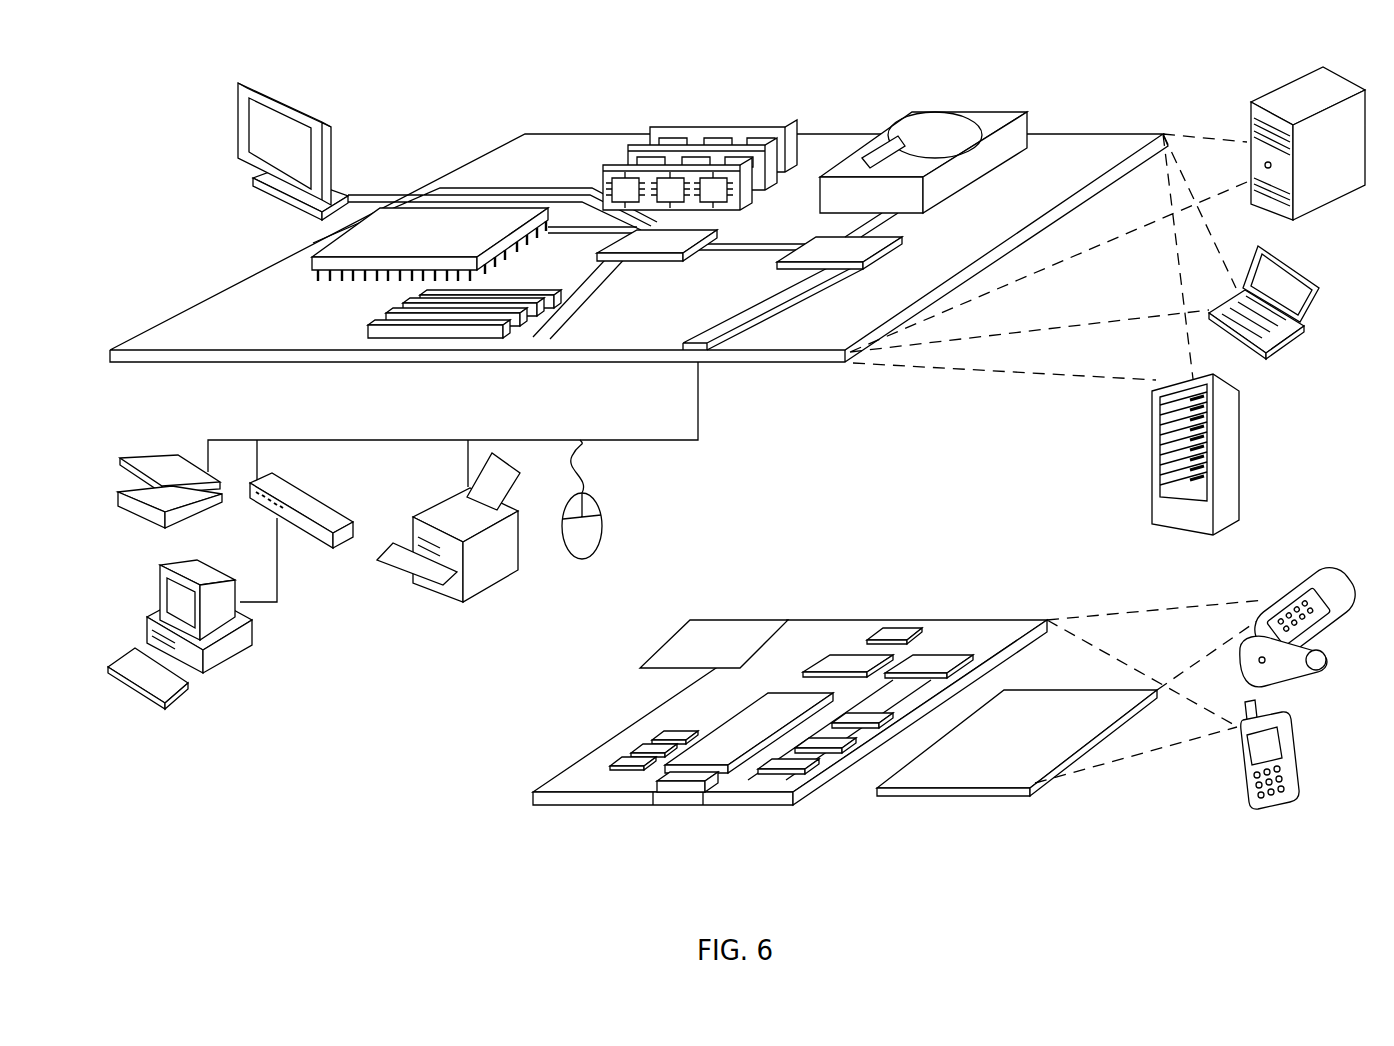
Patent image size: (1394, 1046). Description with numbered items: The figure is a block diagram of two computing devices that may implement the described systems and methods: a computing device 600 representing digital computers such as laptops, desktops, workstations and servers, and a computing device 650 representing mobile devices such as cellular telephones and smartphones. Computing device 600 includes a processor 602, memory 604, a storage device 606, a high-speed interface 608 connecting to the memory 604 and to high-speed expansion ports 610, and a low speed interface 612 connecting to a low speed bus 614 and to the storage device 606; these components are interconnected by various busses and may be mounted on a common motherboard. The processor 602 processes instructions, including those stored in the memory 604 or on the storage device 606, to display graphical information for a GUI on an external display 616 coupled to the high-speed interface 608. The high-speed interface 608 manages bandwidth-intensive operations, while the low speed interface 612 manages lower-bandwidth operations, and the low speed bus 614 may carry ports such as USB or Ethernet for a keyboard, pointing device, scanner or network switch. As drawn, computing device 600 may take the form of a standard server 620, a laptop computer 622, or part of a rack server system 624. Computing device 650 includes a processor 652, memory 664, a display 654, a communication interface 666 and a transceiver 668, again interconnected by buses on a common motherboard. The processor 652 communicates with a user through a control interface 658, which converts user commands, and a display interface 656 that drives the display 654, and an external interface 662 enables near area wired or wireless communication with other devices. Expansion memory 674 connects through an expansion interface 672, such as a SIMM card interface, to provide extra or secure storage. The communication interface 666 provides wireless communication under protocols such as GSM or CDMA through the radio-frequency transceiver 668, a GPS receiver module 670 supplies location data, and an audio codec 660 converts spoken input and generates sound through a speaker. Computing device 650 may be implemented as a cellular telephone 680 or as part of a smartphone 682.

The computing device 600 is at (452, 108).
The processor 602 is at (318, 262).
The memory 604 is at (662, 130).
The storage device 606 is at (906, 120).
The high-speed interface 608 is at (605, 243).
The high-speed expansion ports 610 is at (392, 323).
The low speed interface 612 is at (822, 252).
The low speed bus 614 is at (712, 352).
The display 616 is at (243, 80).
The standard server 620 is at (1250, 110).
The laptop computer 622 is at (1328, 268).
The rack server system 624 is at (1205, 502).
The computing device 650 is at (851, 722).
The processor 652 is at (720, 758).
The display 654 is at (972, 774).
The display interface 656 is at (790, 776).
The control interface 658 is at (833, 762).
The audio codec 660 is at (865, 724).
The external interface 662 is at (685, 794).
The memory 664 is at (632, 752).
The communication interface 666 is at (851, 658).
The transceiver 668 is at (931, 658).
The GPS receiver module 670 is at (896, 628).
The expansion interface 672 is at (776, 636).
The expansion memory 674 is at (703, 641).
The cellular telephone 680 is at (1298, 574).
The smartphone 682 is at (1238, 765).